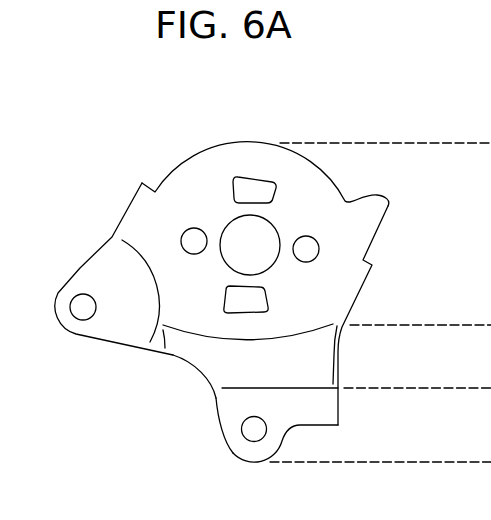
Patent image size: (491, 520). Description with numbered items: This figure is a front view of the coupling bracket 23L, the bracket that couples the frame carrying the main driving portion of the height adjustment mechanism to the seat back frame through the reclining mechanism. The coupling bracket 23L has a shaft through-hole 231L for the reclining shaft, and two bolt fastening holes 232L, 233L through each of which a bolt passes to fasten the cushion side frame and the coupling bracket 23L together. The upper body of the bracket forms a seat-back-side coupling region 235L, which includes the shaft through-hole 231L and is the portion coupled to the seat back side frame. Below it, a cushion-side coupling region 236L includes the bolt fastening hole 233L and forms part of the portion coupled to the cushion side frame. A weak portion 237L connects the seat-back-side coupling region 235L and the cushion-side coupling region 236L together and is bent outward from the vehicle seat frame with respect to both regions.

The coupling bracket 23L is at (100, 147).
The shaft through-hole 231L is at (241, 219).
The bolt fastening hole 232L is at (88, 299).
The bolt fastening hole 233L is at (247, 436).
The seat-back-side coupling region 235L is at (342, 242).
The cushion-side coupling region 236L is at (240, 408).
The weak portion 237L is at (224, 362).